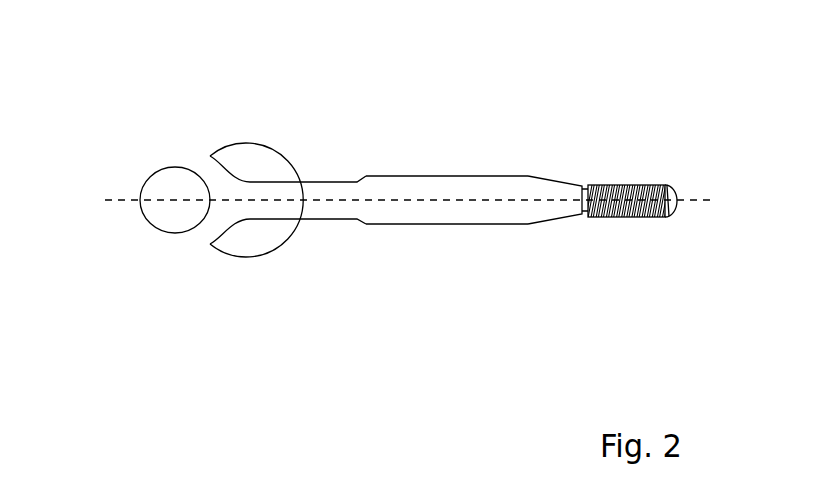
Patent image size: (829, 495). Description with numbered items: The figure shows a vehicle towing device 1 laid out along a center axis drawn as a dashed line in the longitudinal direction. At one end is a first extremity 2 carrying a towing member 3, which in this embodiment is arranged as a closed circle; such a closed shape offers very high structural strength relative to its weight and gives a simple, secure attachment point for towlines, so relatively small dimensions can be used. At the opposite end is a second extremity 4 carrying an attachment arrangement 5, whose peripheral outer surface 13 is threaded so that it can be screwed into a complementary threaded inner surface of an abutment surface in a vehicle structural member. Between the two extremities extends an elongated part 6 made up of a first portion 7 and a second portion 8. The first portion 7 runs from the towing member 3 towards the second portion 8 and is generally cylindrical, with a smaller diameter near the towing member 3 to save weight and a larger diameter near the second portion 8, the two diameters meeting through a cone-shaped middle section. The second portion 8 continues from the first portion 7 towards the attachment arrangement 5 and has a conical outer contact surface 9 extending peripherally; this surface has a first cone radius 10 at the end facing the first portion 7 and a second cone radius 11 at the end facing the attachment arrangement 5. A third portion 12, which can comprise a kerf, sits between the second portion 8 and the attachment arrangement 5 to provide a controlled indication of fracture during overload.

The vehicle towing device 1 is at (378, 93).
The first extremity 2 is at (159, 268).
The towing member 3 is at (165, 158).
The second extremity 4 is at (667, 241).
The attachment arrangement 5 is at (635, 143).
The elongated part 6 is at (428, 335).
The first portion 7 is at (367, 252).
The second portion 8 is at (545, 242).
The conical outer contact surface 9 is at (557, 219).
The first cone radius 10 is at (528, 182).
The second cone radius 11 is at (574, 190).
The third portion 12 is at (583, 226).
The peripheral outer surface 13 is at (650, 184).